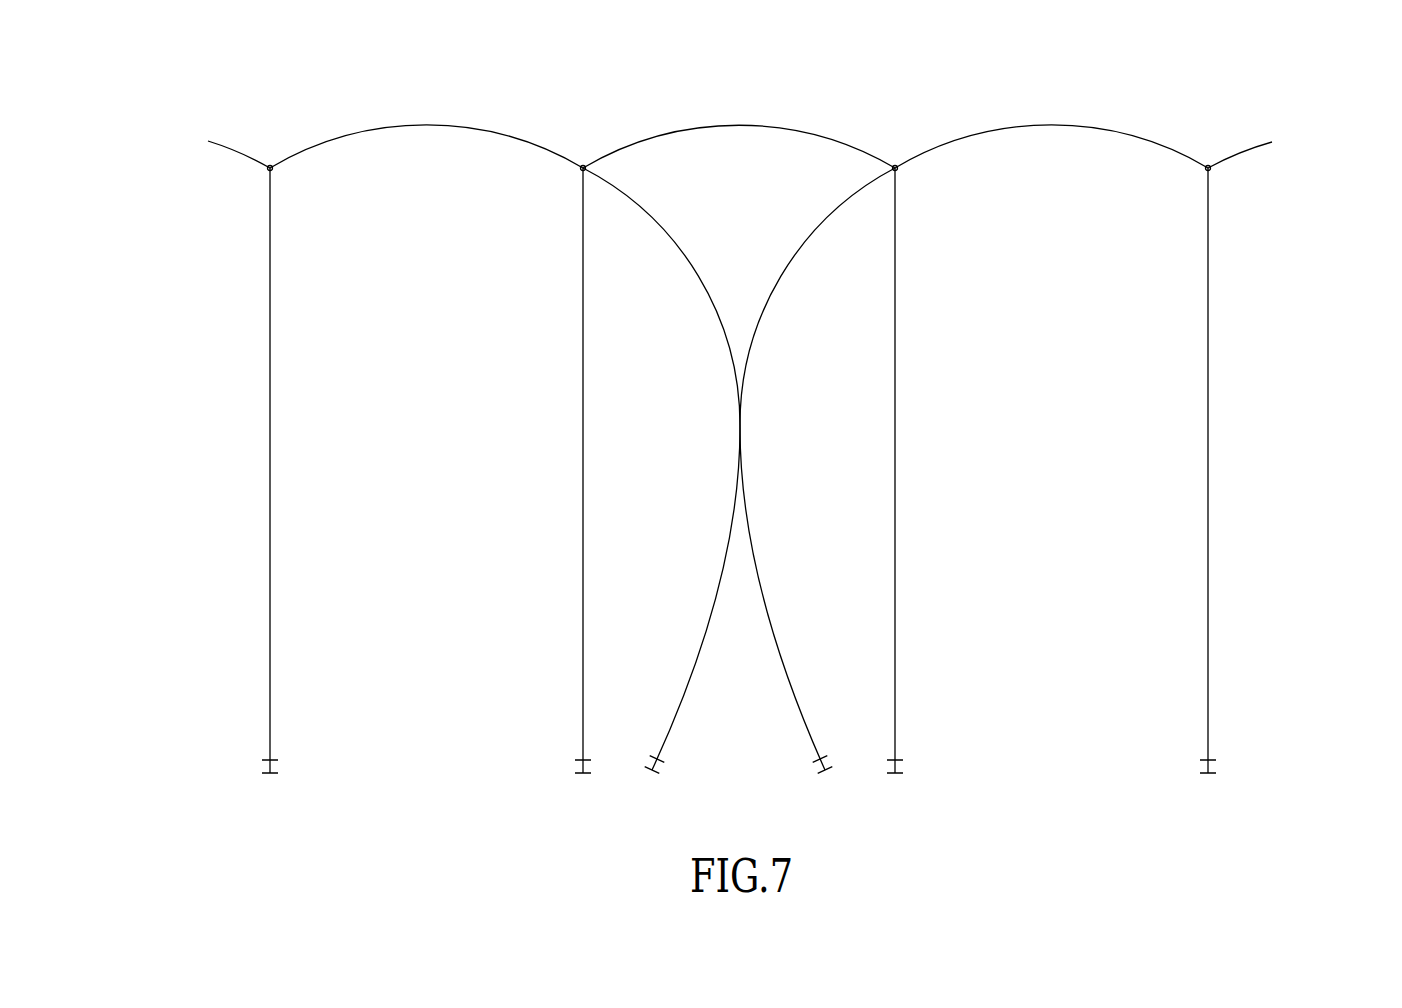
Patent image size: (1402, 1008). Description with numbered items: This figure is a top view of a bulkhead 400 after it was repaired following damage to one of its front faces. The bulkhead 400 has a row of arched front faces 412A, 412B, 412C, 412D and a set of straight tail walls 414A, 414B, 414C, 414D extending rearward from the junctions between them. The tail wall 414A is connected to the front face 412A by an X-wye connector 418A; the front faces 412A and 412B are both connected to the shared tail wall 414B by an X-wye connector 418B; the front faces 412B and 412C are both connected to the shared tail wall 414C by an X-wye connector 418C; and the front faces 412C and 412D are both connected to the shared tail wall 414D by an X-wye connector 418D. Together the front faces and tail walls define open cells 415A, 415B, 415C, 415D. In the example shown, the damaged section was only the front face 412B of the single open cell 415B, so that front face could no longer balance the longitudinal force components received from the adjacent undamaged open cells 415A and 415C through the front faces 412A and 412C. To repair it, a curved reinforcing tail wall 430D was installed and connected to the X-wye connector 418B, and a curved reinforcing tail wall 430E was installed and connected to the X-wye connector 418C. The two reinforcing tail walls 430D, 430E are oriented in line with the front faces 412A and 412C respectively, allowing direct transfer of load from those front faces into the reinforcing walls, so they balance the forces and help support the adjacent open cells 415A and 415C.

The bulkhead 400 is at (238, 85).
The front face 412A is at (363, 130).
The front face 412B is at (712, 127).
The front face 412C is at (1097, 127).
The front face 412D is at (1257, 133).
The tail wall 414A is at (272, 487).
The tail wall 414B is at (587, 487).
The tail wall 414C is at (897, 487).
The tail wall 414D is at (1212, 487).
The open cell 415A is at (460, 313).
The open cell 415B is at (775, 221).
The open cell 415C is at (1087, 313).
The open cell 415D is at (1347, 313).
The X-wye connector 418A is at (270, 168).
The X-wye connector 418B is at (583, 168).
The X-wye connector 418C is at (897, 170).
The X-wye connector 418D is at (1210, 170).
The curved reinforcing tail wall 430D is at (717, 580).
The curved reinforcing tail wall 430E is at (763, 580).